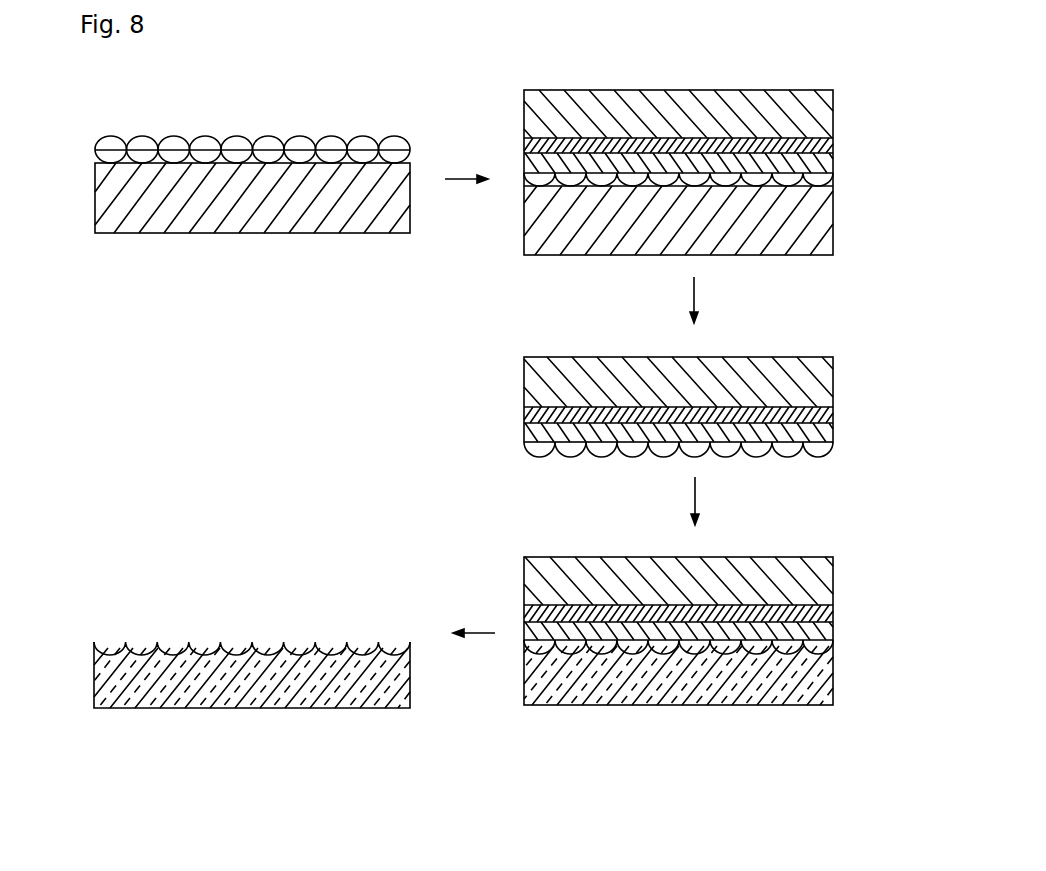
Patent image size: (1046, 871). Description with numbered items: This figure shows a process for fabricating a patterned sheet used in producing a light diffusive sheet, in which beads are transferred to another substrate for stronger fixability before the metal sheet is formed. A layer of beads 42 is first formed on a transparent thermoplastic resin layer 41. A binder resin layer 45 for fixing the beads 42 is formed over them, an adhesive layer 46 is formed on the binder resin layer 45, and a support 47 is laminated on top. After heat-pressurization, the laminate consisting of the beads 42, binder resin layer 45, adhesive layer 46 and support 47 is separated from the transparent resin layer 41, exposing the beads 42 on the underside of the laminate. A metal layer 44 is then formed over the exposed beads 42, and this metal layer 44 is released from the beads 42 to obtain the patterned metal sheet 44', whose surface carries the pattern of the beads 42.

The resin layer 41 is at (293, 215).
The beads 42 is at (362, 140).
The metal layer 44 is at (709, 675).
The patterned metal sheet 44' is at (252, 704).
The binder resin layer 45 is at (833, 163).
The adhesive layer 46 is at (833, 142).
The support 47 is at (833, 110).